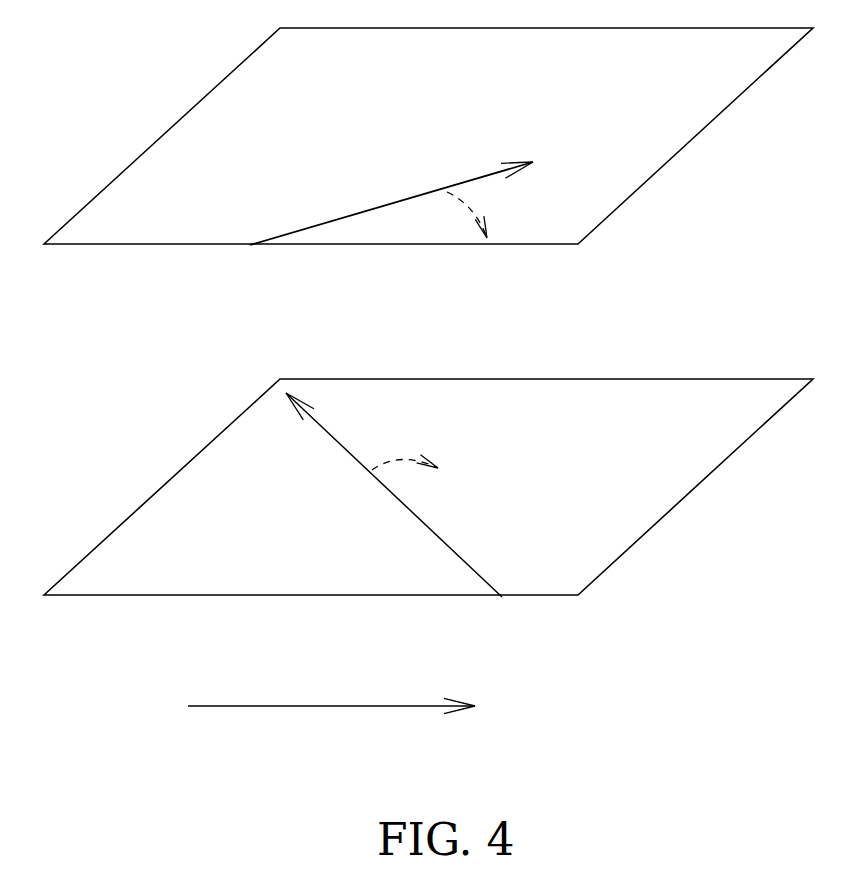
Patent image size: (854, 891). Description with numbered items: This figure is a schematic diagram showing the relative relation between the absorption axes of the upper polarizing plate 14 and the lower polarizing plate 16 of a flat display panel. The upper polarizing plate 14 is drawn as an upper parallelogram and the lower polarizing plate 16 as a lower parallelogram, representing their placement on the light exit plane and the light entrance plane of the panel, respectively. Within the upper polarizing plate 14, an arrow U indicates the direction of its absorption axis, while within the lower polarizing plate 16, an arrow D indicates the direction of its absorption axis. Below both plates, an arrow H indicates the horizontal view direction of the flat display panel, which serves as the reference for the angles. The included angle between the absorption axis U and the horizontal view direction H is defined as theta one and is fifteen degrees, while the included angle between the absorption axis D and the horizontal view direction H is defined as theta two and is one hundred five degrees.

The upper polarizing plate 14 is at (697, 135).
The lower polarizing plate 16 is at (697, 487).
The absorption axis direction of the upper polarizing plate U is at (406, 191).
The absorption axis direction of the lower polarizing plate D is at (394, 490).
The horizontal view direction H is at (350, 709).